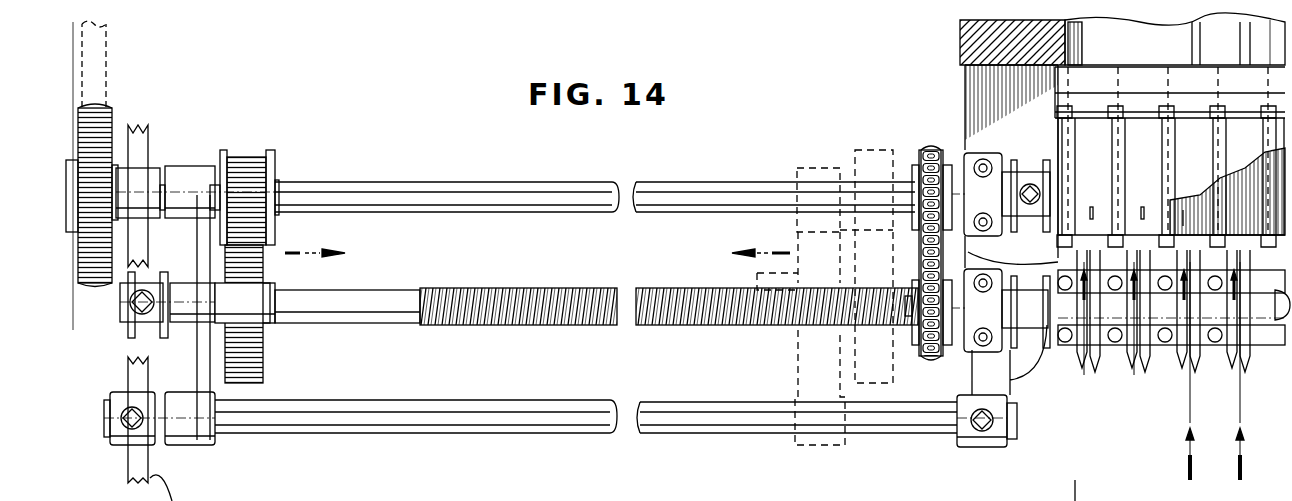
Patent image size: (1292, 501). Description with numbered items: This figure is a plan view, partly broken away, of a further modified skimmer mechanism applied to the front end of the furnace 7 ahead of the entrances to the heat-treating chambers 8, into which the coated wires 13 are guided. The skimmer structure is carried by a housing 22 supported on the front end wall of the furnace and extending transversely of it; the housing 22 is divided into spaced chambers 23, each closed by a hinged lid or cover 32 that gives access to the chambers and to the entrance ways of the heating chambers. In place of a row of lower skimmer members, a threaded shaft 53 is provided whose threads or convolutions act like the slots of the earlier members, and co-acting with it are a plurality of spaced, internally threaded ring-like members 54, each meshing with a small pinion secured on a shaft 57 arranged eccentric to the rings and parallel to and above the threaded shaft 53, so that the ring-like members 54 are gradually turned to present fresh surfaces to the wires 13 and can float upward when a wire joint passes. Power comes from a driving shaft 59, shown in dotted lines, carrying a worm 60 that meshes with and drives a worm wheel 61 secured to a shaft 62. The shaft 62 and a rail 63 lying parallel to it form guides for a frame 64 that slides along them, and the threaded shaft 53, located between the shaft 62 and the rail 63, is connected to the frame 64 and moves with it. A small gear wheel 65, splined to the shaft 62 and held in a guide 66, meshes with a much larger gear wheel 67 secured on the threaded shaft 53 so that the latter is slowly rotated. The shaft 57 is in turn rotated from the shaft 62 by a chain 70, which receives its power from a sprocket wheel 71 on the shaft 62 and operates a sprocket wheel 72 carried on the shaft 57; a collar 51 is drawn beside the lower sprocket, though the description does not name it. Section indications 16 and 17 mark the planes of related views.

The furnace 7 is at (962, 47).
The heat-treating chambers 8 is at (1170, 65).
The wires 13 is at (1238, 415).
The section line 16- 16 is at (73, 43).
The reference line 17 is at (1074, 481).
The housing 22 is at (965, 96).
The chambers 23 is at (1182, 210).
The hinged lid or cover 32 is at (1100, 190).
The collar 51 is at (915, 326).
The threaded shaft 53 is at (487, 317).
The ring-like members 54 is at (1136, 370).
The shaft 57 is at (1046, 320).
The driving shaft 59 is at (106, 82).
The worm 60 is at (115, 165).
The worm wheel 61 is at (112, 122).
The shaft 62 is at (405, 190).
The rail 63 is at (488, 425).
The frame 64 is at (197, 445).
The small gear wheel 65 is at (245, 160).
The guide 66 is at (272, 162).
The large gear wheel 67 is at (263, 370).
The chain 70 is at (932, 272).
The sprocket wheel 71 is at (932, 152).
The sprocket wheel 72 is at (933, 357).